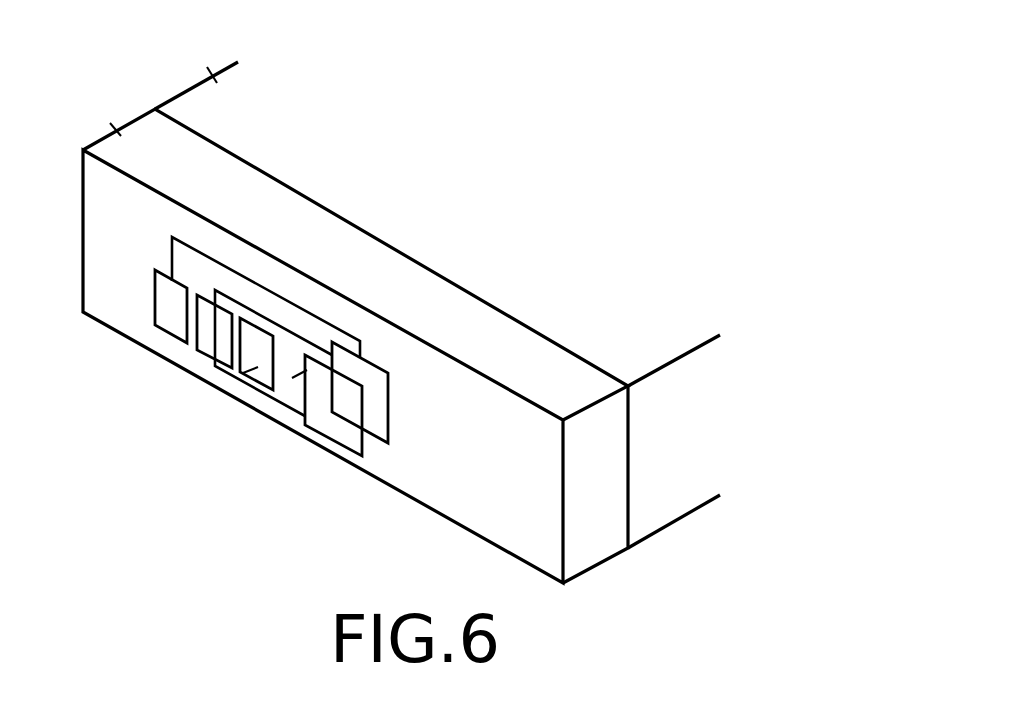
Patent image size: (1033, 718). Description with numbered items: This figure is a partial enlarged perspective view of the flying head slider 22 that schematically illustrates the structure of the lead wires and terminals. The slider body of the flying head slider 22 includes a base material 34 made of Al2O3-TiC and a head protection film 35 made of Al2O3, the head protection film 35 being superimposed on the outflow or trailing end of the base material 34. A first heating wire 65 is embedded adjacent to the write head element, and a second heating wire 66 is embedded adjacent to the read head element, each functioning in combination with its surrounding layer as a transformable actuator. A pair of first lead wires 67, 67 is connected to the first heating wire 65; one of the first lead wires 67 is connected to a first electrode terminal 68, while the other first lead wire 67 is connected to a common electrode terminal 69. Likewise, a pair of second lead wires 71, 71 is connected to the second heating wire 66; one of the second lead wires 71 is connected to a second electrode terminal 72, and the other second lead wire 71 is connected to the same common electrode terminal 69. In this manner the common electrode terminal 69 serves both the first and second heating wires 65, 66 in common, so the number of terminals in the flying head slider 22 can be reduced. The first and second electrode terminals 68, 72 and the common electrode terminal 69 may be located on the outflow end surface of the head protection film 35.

The flying head slider 22 is at (155, 108).
The base material 34 is at (188, 50).
The head protection film 35 is at (92, 106).
The first heating wire 65 is at (388, 410).
The second heating wire 66 is at (345, 452).
The first lead wires 67 is at (257, 281).
The first electrode terminal 68 is at (163, 299).
The common electrode terminal 69 is at (206, 343).
The second lead wires 71 is at (297, 376).
The second electrode terminal 72 is at (237, 375).